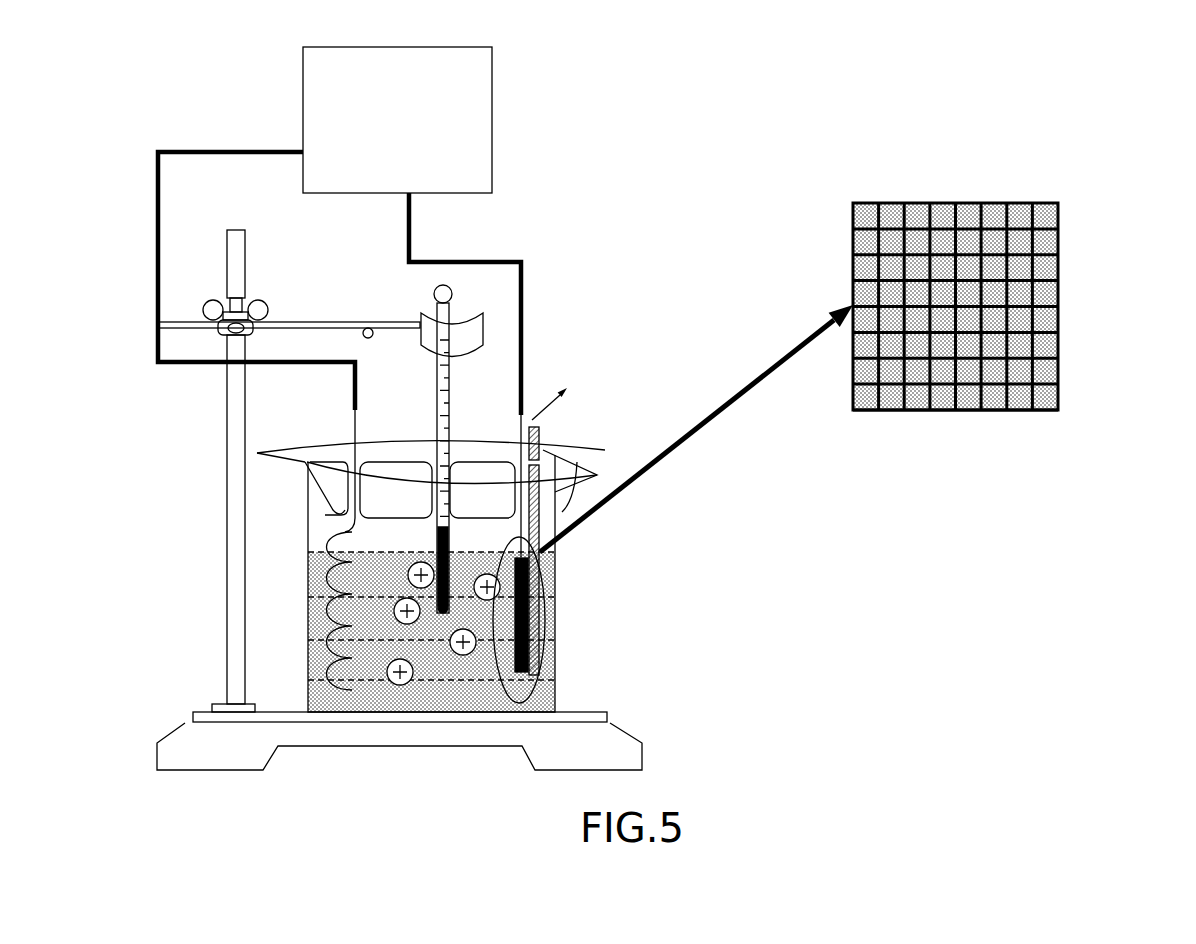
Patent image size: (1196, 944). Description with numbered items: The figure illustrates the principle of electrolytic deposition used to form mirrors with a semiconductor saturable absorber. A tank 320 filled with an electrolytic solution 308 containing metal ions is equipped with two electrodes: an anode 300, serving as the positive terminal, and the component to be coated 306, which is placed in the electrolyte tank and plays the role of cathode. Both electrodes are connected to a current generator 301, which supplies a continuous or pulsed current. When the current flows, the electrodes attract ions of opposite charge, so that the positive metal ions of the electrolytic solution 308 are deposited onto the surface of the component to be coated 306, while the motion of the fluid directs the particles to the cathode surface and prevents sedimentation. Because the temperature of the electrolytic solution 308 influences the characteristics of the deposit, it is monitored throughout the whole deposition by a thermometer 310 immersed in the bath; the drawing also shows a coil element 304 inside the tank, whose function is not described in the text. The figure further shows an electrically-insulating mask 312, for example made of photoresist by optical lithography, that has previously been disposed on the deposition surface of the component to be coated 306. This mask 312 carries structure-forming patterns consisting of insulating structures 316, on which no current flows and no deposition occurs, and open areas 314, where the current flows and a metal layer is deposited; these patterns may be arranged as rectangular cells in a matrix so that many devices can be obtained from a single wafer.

The anode 300 is at (157, 238).
The current generator 301 is at (492, 122).
The heating coil 304 is at (333, 578).
The component to be coated 306 is at (593, 563).
The electrolytic solution 308 is at (392, 610).
The thermometer 310 is at (447, 393).
The electrically-insulating mask 312 is at (1024, 344).
The open areas 314 is at (1043, 245).
The insulating structures 316 is at (993, 410).
The tank 320 is at (555, 657).